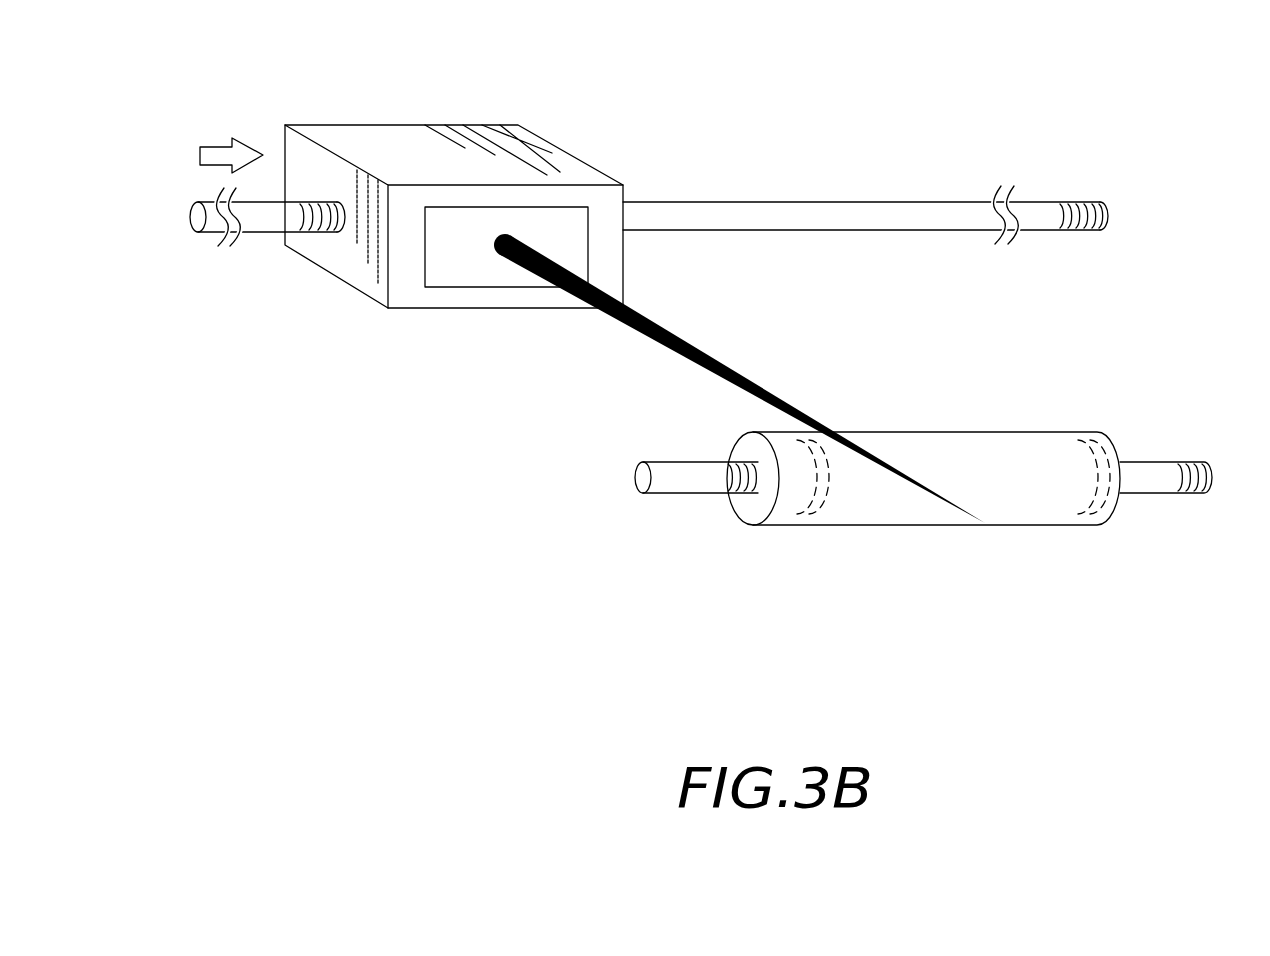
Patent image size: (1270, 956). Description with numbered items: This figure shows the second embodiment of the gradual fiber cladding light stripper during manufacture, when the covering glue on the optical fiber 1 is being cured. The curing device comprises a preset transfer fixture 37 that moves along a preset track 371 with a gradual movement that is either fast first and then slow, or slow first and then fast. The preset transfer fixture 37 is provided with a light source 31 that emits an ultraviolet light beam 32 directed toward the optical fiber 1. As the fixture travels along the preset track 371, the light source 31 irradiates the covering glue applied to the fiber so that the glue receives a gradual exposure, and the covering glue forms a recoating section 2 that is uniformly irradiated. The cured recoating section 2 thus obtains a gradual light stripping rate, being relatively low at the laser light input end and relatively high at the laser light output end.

The preset transfer fixture 37 is at (398, 138).
The preset track 371 is at (945, 215).
The light source 31 is at (438, 270).
The ultraviolet light beam 32 is at (698, 342).
The optical fiber 1 is at (1138, 472).
The recoating section 2 is at (825, 513).